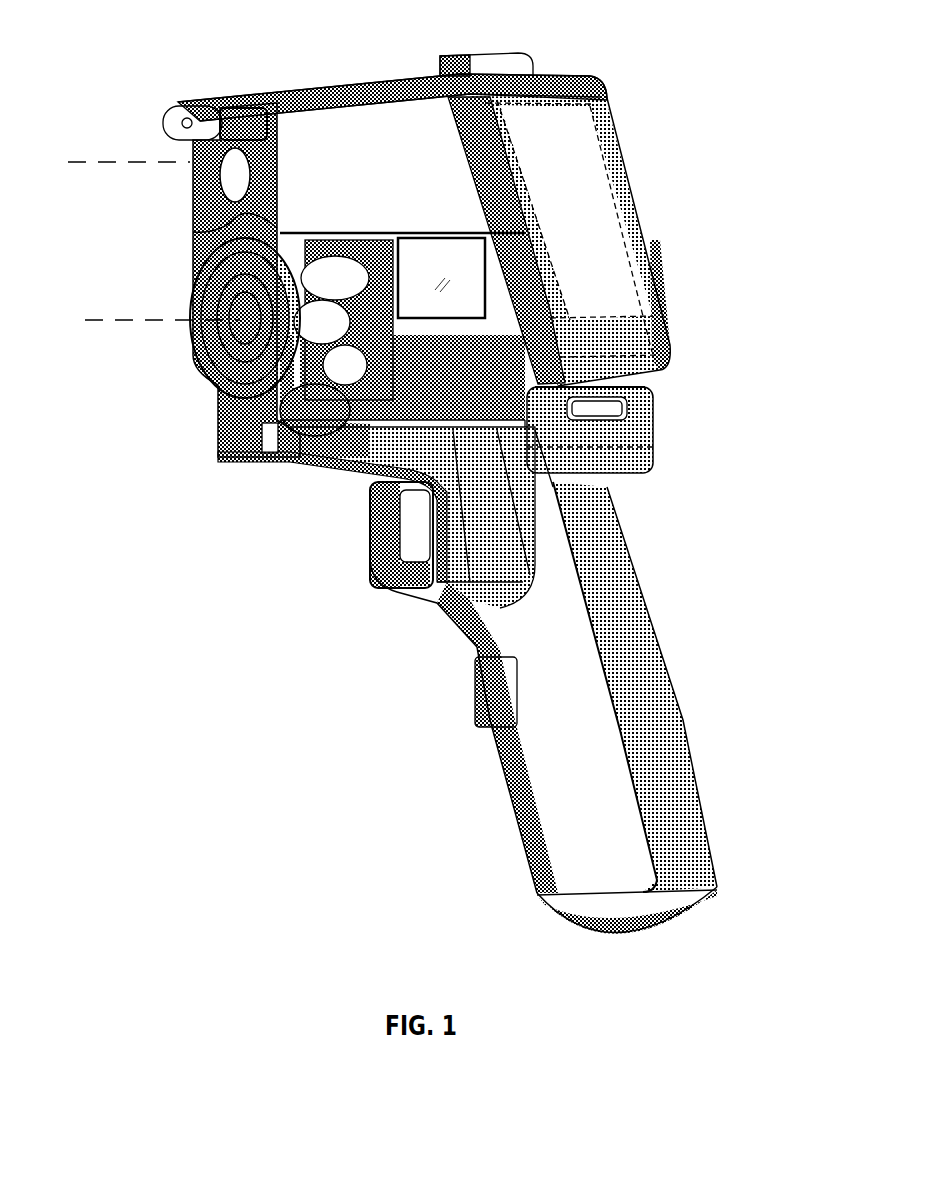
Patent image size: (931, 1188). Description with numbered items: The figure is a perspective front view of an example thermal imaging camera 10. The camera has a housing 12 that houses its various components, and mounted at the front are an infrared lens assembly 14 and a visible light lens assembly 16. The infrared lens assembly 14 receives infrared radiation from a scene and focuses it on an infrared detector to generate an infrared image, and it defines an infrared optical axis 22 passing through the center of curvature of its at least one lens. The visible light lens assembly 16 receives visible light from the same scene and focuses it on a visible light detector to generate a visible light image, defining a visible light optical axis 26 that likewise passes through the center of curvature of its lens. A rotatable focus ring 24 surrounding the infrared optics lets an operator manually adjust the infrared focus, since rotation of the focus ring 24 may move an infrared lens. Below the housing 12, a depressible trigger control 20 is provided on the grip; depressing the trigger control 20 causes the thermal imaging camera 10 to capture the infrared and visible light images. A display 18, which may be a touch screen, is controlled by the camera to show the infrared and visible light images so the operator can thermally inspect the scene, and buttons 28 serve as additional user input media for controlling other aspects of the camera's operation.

The thermal imaging camera 10 is at (724, 89).
The housing 12 is at (333, 133).
The infrared lens assembly 14 is at (247, 287).
The visible light lens assembly 16 is at (233, 153).
The display 18 is at (669, 227).
The trigger control 20 is at (362, 565).
The infrared optical axis 22 is at (92, 326).
The focus ring 24 is at (303, 420).
The visible light optical axis 26 is at (75, 168).
The buttons 28 is at (670, 436).